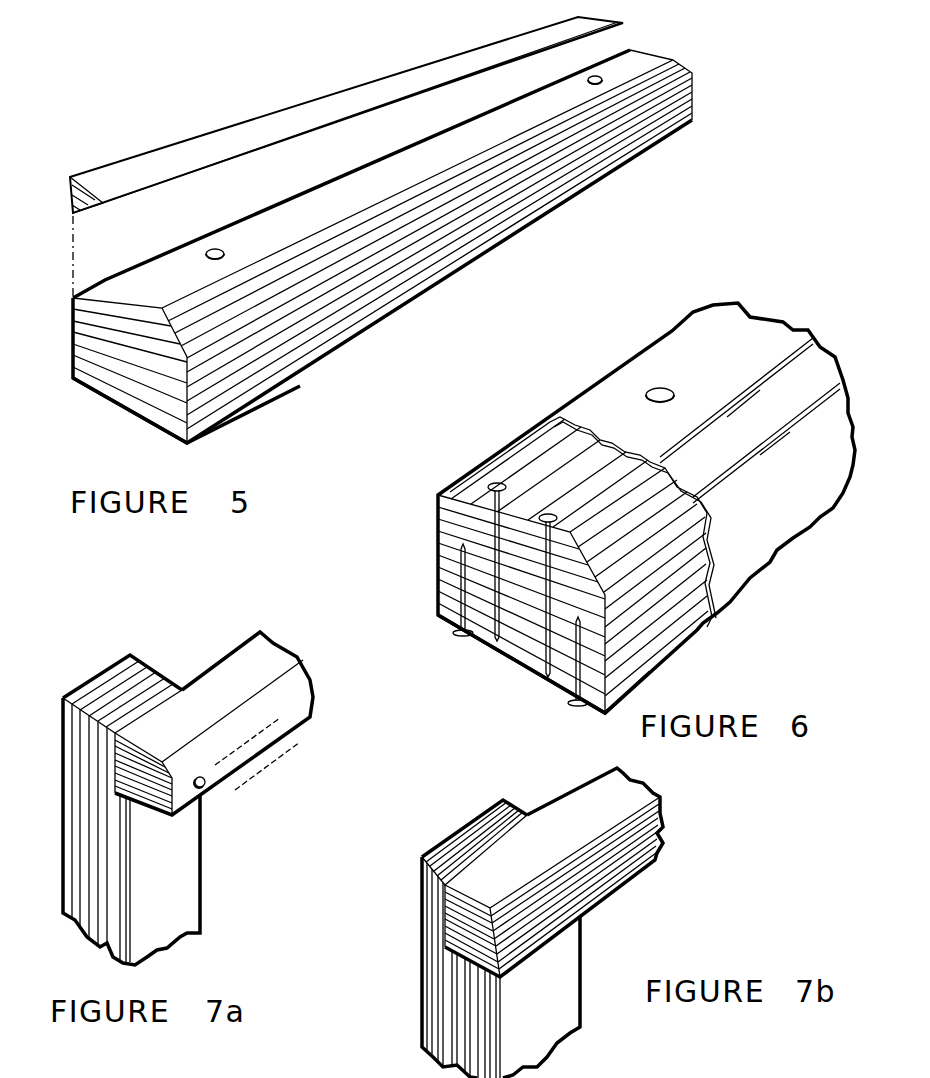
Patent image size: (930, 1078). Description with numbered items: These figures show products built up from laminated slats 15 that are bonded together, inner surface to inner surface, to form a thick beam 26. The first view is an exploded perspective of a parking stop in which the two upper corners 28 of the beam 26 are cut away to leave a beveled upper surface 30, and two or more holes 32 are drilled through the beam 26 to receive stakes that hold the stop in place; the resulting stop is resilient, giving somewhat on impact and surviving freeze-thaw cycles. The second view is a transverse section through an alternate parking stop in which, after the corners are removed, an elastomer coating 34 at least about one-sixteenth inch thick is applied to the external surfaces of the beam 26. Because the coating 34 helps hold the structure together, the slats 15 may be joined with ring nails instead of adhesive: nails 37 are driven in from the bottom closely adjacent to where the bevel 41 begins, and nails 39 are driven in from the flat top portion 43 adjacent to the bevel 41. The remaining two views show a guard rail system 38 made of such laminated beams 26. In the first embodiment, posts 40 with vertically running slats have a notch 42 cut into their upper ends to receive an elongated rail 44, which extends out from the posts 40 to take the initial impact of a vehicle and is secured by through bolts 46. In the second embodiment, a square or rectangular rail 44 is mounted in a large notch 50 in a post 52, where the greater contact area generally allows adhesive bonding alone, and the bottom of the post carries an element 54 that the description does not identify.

In FIG. 5, the slat 15 is at (280, 377).
In FIG. 6, the slat 15 is at (458, 555).
In FIG. 7A, the slat 15 is at (113, 863).
In FIG. 7B, the slat 15 is at (603, 878).
In FIG. 5, the beam 26 is at (137, 420).
In FIG. 6, the beam 26 is at (500, 655).
In FIG. 5, the upper corners 28 is at (173, 155).
In FIG. 5, the beveled upper surface 30 is at (80, 294).
In FIG. 5, the holes 32 is at (216, 250).
In FIG. 6, the holes 32 is at (652, 388).
In FIG. 6, the coating 34 is at (785, 512).
In FIG. 6, the nails 37 is at (456, 634).
In FIG. 6, the nails 39 is at (548, 514).
In FIG. 6, the bevel 41 is at (522, 440).
In FIG. 6, the flat top portion 43 is at (590, 500).
In FIG. 7A, the guard rail system 38 is at (175, 640).
In FIG. 7A, the posts 40 is at (180, 905).
In FIG. 7A, the notch 42 is at (133, 752).
In FIG. 7A, the rail 44 is at (287, 720).
In FIG. 7B, the rail 44 is at (570, 813).
In FIG. 7A, the through bolts 46 is at (205, 790).
In FIG. 7B, the notch 50 is at (462, 860).
In FIG. 7B, the post 52 is at (555, 1010).
In FIG. 7B, the fastener 54 is at (648, 1077).